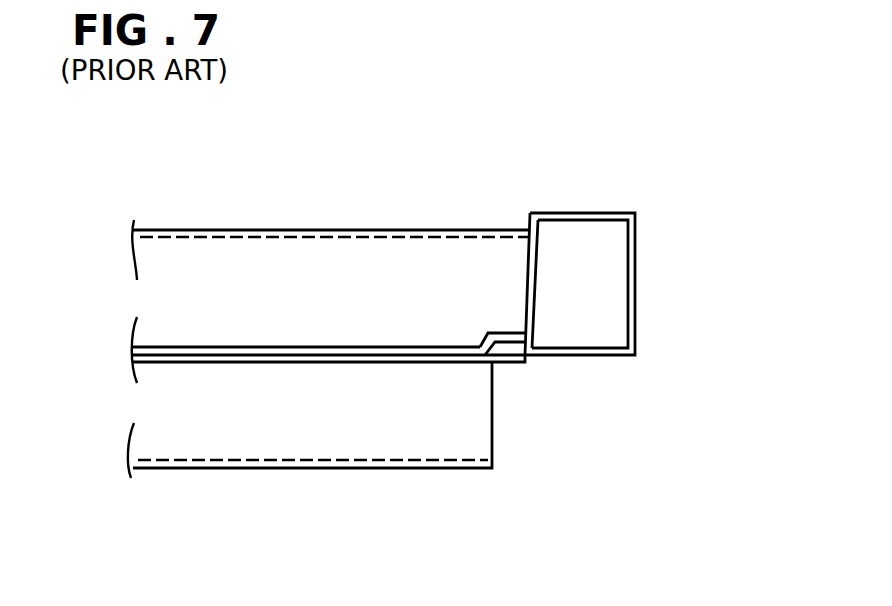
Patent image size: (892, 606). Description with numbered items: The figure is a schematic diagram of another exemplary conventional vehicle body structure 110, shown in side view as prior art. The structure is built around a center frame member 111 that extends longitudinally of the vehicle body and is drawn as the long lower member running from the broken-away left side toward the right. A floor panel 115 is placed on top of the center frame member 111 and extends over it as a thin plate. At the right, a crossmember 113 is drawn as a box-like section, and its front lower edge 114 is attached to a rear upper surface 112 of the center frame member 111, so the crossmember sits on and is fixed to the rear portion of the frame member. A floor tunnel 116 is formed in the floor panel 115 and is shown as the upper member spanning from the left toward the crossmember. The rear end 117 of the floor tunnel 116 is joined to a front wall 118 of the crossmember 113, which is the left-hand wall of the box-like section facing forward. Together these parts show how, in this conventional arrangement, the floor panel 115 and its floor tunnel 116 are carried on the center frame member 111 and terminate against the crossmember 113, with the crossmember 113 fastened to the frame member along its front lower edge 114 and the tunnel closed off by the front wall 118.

The vehicle body structure 110 is at (586, 101).
The center frame member 111 is at (306, 443).
The rear upper surface 112 is at (510, 363).
The crossmember 113 is at (628, 212).
The front lower edge 114 is at (508, 343).
The floor panel 115 is at (222, 346).
The floor tunnel 116 is at (322, 229).
The rear end 117 is at (515, 285).
The front wall 118 is at (533, 263).